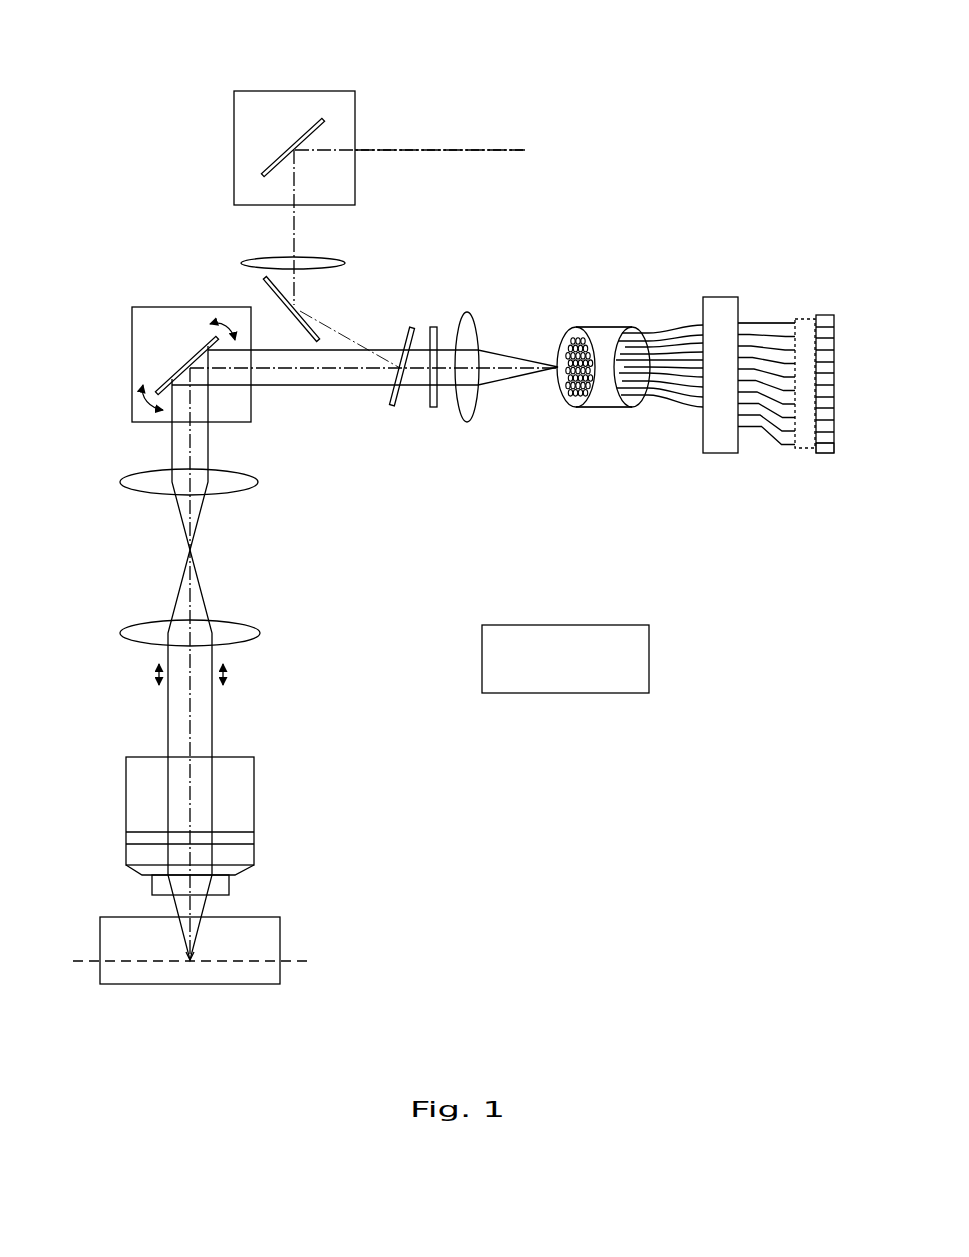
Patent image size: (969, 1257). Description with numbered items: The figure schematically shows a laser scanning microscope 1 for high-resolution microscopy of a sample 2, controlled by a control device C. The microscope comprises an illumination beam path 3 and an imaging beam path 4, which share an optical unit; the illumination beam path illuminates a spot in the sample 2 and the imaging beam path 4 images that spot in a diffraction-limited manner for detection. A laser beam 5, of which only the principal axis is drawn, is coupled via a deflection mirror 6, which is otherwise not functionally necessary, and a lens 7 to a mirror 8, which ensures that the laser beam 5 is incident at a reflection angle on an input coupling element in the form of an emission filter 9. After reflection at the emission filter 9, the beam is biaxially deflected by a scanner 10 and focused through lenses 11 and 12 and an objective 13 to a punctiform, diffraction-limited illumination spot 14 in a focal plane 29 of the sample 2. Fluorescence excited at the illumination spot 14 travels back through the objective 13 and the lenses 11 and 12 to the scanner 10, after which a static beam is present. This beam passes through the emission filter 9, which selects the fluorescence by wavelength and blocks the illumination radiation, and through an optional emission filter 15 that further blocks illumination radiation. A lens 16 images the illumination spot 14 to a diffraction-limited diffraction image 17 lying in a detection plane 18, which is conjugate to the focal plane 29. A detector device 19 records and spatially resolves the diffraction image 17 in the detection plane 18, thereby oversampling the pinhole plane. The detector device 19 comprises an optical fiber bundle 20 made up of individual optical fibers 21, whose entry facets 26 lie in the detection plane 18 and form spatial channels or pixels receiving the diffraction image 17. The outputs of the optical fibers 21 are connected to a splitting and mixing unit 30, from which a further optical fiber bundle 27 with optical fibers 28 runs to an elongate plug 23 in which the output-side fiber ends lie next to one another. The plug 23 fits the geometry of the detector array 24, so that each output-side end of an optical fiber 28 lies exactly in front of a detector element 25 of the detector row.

The laser scanning microscope 1 is at (473, 837).
The sample 2 is at (273, 938).
The illumination beam path 3 is at (350, 138).
The imaging beam path 4 is at (562, 373).
The laser beam 5 is at (448, 150).
The deflection mirror 6 is at (293, 91).
The lens 7 is at (342, 258).
The mirror 8 is at (268, 293).
The emission filter 9 is at (397, 403).
The scanner 10 is at (242, 405).
The lens 11 is at (257, 482).
The lens 12 is at (260, 633).
The objective 13 is at (254, 805).
The illumination spot 14 is at (190, 960).
The emission filter 15 is at (432, 327).
The lens 16 is at (467, 312).
The diffraction image 17 is at (560, 357).
The detection plane 18 is at (578, 407).
The detector device 19 is at (741, 375).
The optical fiber bundle 20 is at (607, 345).
The optical fibers 21 is at (653, 330).
The plug 23 is at (797, 320).
The detector array 24 is at (830, 317).
The detector element 25 is at (823, 447).
The entry facets 26 is at (558, 385).
The further optical fiber bundle 27 is at (748, 328).
The optical fibers 28 is at (762, 437).
The focal plane 29 is at (298, 964).
The splitting and mixing unit 30 is at (725, 453).
The control device C is at (639, 657).